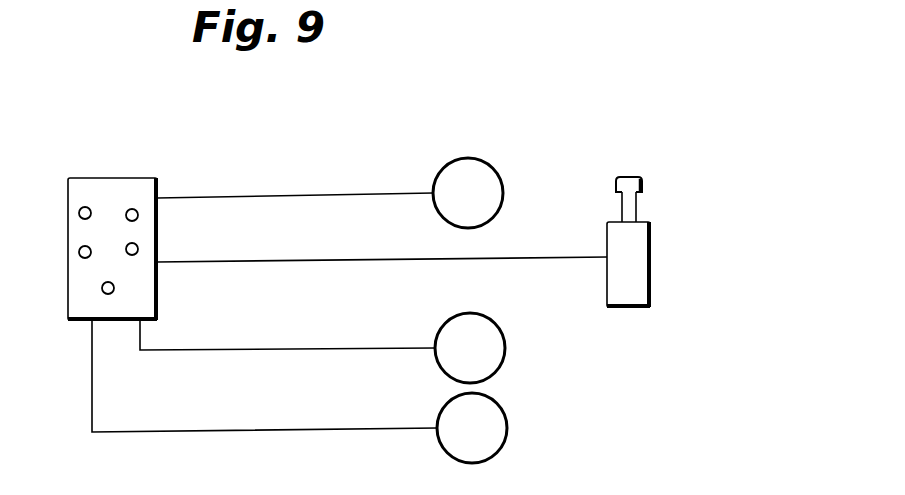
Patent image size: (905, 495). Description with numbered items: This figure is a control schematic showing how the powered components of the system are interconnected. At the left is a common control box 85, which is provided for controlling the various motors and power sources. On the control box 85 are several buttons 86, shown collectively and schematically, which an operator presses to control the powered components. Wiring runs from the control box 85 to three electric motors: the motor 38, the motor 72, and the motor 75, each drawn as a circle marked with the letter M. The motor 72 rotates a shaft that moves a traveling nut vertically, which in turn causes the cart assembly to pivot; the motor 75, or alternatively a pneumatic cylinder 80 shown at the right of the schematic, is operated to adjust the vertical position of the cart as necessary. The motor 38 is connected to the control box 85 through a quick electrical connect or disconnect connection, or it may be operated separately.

The control box 85 is at (85, 177).
The buttons 86 is at (140, 249).
The motor 38 is at (468, 158).
The electric motor 72 is at (492, 329).
The motor 75 is at (504, 402).
The pneumatic cylinder 80 is at (636, 239).